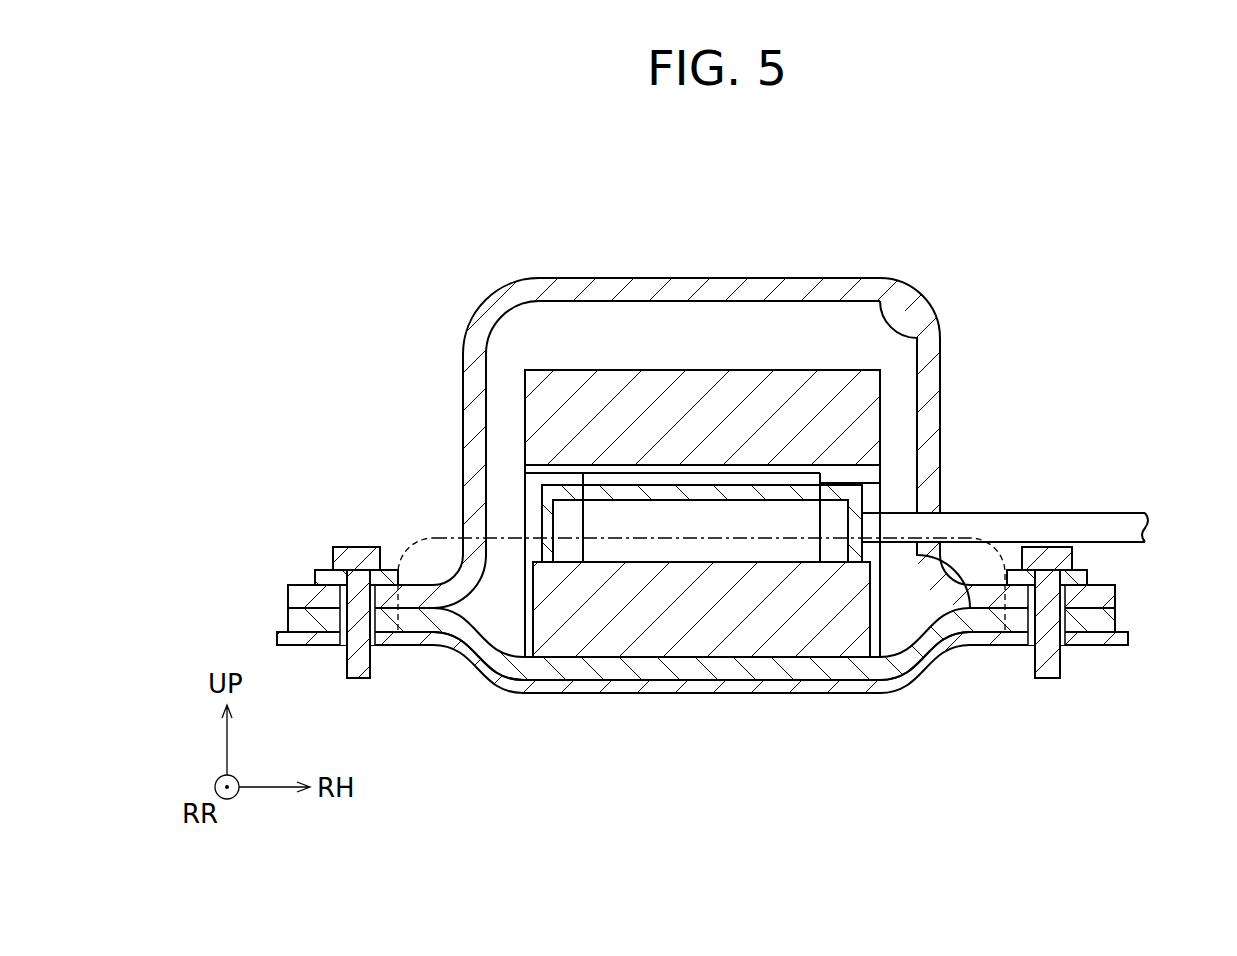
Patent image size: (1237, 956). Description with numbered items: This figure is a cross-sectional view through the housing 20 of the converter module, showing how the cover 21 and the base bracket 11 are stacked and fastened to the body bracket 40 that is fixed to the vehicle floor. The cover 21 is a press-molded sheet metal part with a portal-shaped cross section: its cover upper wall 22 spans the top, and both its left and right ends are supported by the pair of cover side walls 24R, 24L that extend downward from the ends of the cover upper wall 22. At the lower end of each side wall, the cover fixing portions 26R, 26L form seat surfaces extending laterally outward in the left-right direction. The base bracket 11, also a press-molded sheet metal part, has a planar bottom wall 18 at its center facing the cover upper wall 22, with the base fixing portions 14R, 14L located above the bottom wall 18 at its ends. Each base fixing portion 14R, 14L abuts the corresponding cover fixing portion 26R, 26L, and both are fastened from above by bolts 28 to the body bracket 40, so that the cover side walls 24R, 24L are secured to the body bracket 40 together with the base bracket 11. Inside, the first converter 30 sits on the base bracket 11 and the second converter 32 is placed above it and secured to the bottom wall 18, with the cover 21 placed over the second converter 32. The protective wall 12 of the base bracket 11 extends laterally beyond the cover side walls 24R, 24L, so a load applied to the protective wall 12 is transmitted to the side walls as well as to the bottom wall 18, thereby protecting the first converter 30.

The base bracket 11 is at (707, 698).
The protective wall 12 is at (432, 537).
The left-side base fixing portion 14L is at (282, 640).
The right-side base fixing portion 14R is at (1118, 628).
The bottom wall 18 is at (755, 670).
The housing 20 is at (1027, 206).
The cover 21 is at (707, 399).
The cover upper wall 22 is at (703, 290).
The left cover side wall 24L is at (475, 368).
The right cover side wall 24R is at (930, 356).
The left cover fixing portion 26L is at (290, 598).
The right cover fixing portion 26R is at (1117, 600).
The bolt 28 is at (358, 560).
The first converter 30 is at (650, 645).
The second converter 32 is at (740, 385).
The body bracket 40 is at (315, 646).